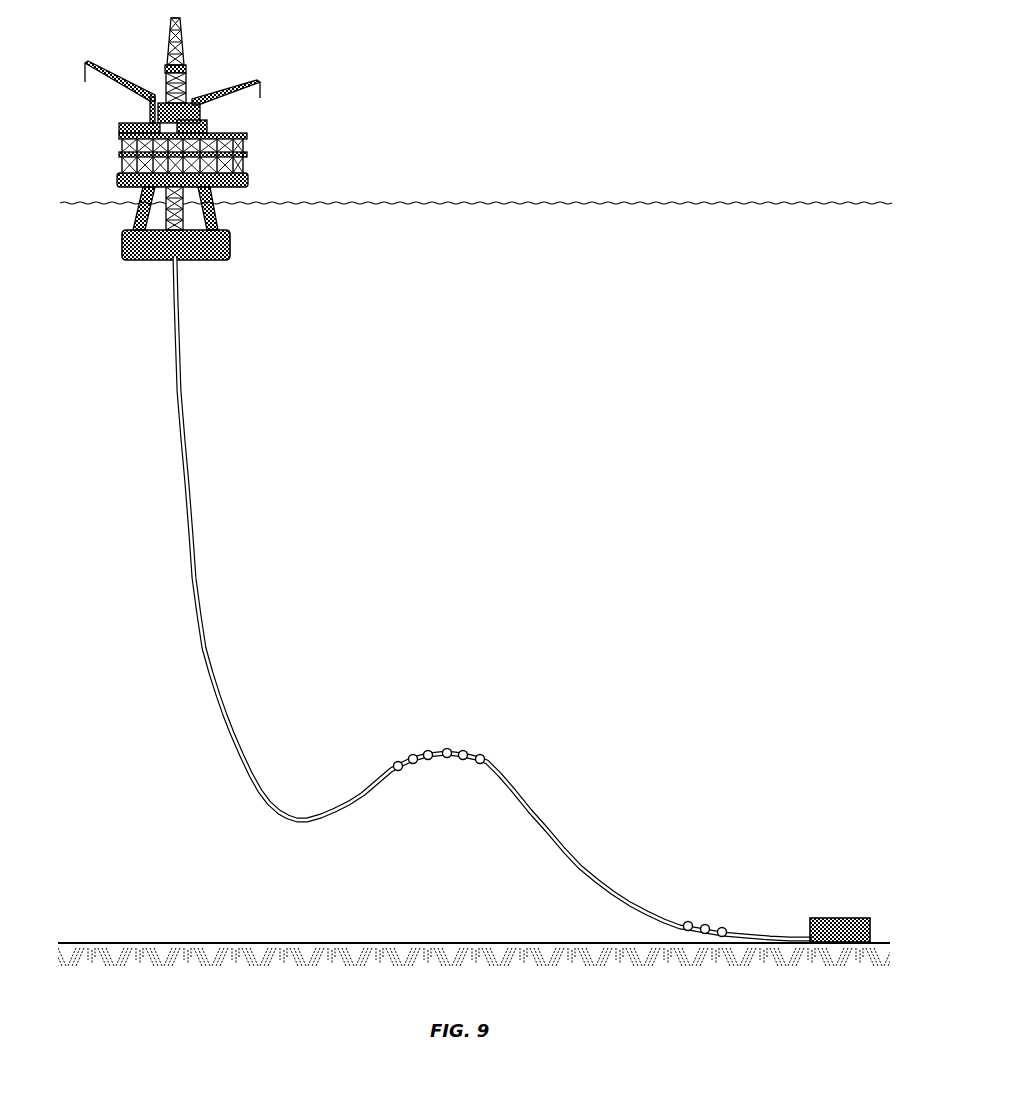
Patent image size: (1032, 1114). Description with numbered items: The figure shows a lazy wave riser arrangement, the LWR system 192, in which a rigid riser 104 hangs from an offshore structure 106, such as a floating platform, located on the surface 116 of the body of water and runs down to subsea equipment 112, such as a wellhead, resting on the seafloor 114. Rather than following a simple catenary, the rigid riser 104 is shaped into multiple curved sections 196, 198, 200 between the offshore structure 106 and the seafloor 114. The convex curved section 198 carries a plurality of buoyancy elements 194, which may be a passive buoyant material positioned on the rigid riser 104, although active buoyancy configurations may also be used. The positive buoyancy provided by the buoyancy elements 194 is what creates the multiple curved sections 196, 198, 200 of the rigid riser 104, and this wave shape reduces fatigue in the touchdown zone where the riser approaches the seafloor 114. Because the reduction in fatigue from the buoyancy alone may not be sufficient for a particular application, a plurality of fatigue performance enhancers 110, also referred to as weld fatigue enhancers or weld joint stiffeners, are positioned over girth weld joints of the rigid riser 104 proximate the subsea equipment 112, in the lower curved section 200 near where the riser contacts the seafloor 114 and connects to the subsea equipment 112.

The rigid riser 104 is at (189, 579).
The offshore structure 106 is at (262, 148).
The fatigue performance enhancers 110 is at (722, 928).
The subsea equipment 112 is at (830, 918).
The seafloor 114 is at (187, 943).
The surface 116 is at (541, 203).
The LWR system 192 is at (312, 512).
The buoyancy elements 194 is at (479, 755).
The curved section 196 is at (318, 840).
The convex curved section 198 is at (435, 790).
The curved section 200 is at (638, 917).